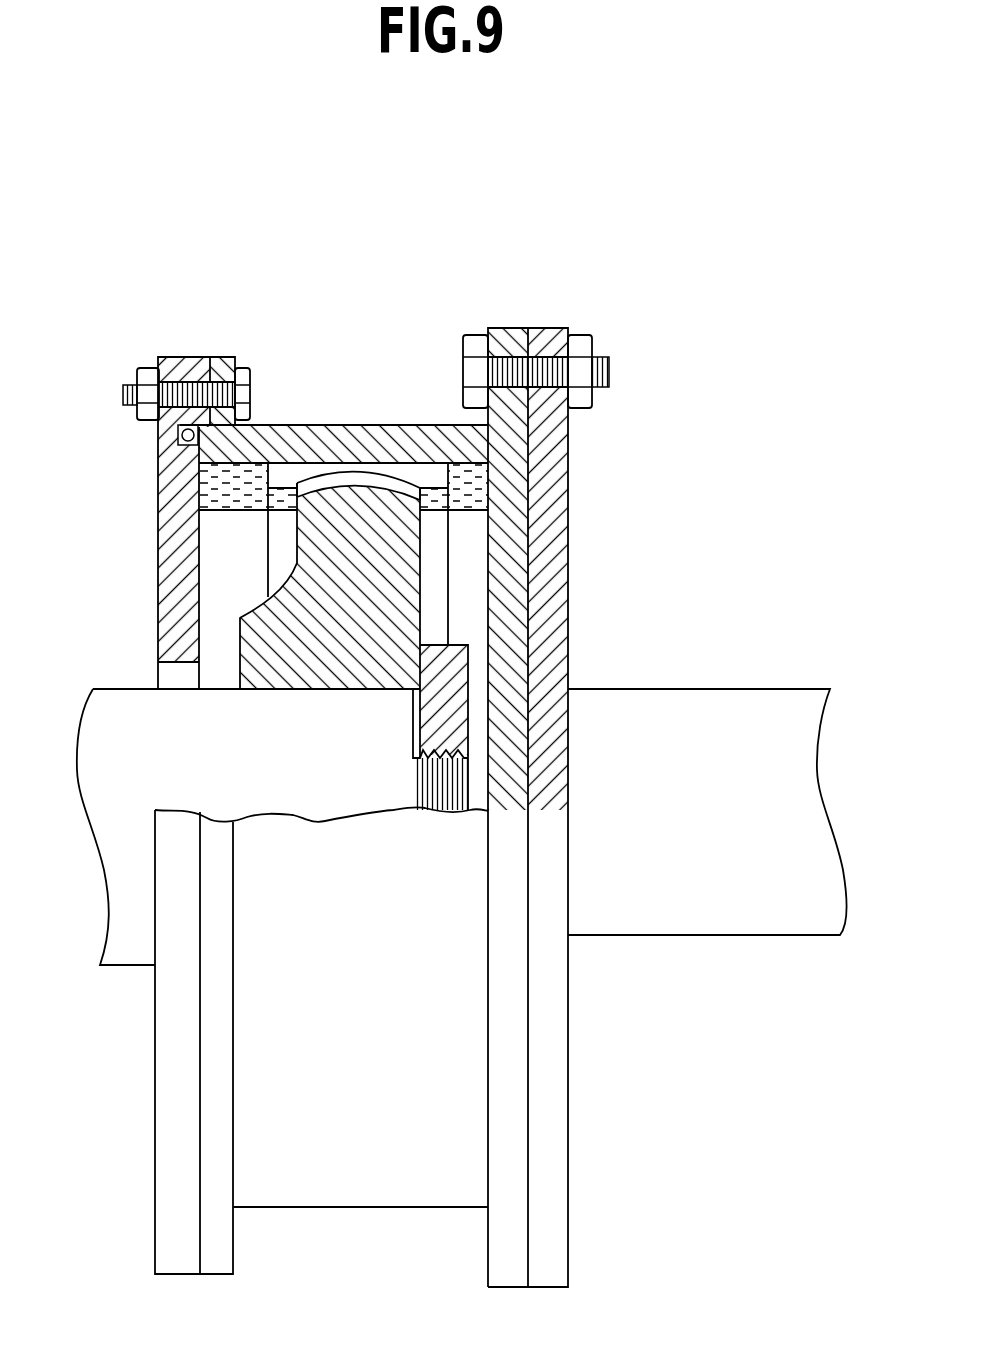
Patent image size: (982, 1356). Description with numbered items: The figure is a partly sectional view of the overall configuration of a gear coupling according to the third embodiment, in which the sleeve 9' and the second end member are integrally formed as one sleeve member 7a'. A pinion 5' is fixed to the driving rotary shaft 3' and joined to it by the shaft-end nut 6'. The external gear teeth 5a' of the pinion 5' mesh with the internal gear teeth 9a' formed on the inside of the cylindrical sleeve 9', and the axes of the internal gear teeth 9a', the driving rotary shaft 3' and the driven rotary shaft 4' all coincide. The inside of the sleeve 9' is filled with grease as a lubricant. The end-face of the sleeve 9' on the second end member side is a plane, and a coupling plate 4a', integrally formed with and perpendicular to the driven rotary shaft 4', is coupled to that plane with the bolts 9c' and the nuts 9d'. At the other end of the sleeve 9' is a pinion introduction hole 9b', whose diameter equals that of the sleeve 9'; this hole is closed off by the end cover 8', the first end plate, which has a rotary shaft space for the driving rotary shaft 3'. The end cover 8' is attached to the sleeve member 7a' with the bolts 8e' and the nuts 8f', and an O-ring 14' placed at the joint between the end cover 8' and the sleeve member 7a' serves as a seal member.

The driving rotary shaft 3' is at (258, 827).
The driven rotary shaft 4' is at (722, 812).
The coupling plate 4a' is at (570, 807).
The pinion 5' is at (330, 554).
The external gear teeth 5a' is at (358, 434).
The shaft-end nut 6' is at (443, 696).
The sleeve member 7a' is at (406, 383).
The end cover 8' is at (175, 523).
The bolts 8e' is at (214, 351).
The nuts 8f' is at (150, 355).
The sleeve 9' is at (334, 399).
The internal gear teeth 9a' is at (454, 503).
The pinion introduction hole 9b' is at (250, 456).
The bolts 9c' is at (486, 334).
The nuts 9d' is at (602, 343).
The O-ring 14' is at (140, 437).